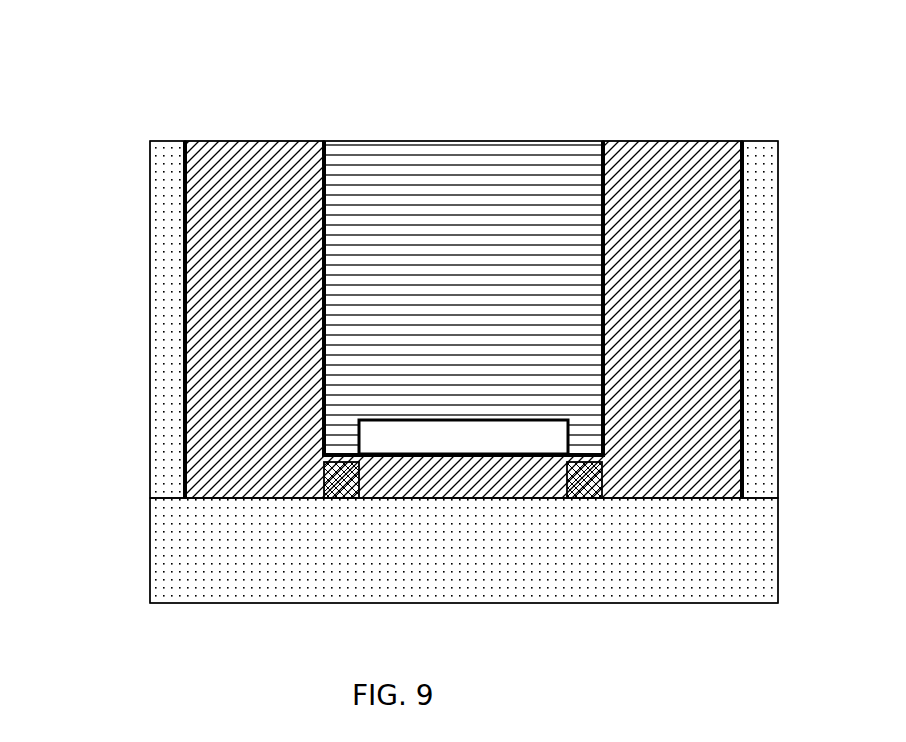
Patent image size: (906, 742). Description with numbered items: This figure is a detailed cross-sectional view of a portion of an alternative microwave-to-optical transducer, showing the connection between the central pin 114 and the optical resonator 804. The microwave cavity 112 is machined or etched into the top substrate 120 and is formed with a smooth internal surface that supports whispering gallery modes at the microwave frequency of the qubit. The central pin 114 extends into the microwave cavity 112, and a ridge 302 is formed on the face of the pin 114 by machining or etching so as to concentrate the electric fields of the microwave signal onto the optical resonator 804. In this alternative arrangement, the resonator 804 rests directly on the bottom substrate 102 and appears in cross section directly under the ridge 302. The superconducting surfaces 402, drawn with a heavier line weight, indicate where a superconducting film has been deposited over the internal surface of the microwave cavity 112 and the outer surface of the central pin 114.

The bottom substrate 102 is at (150, 548).
The top substrate 120 is at (150, 296).
The microwave cavity 112 is at (255, 141).
The central pin 114 is at (465, 141).
The ridge 302 is at (565, 432).
The optical resonator 804 is at (340, 498).
The superconducting surfaces 402 is at (742, 141).